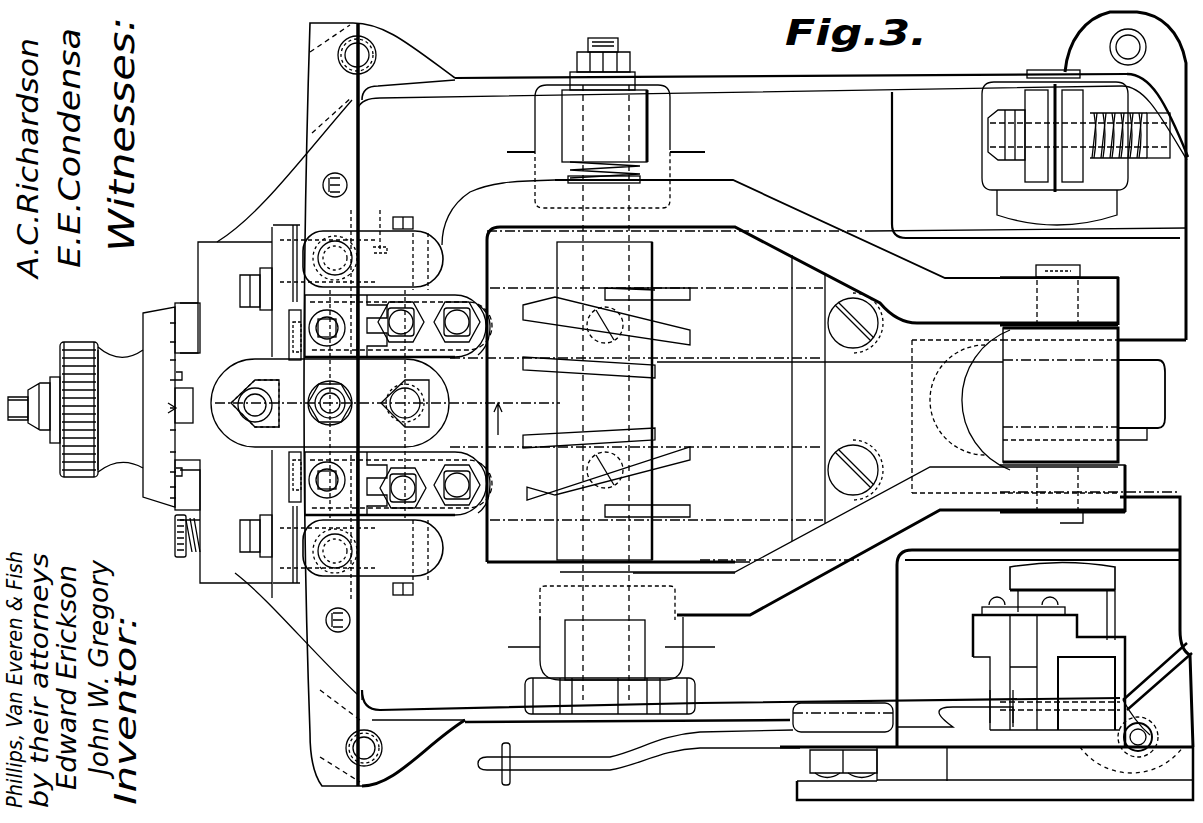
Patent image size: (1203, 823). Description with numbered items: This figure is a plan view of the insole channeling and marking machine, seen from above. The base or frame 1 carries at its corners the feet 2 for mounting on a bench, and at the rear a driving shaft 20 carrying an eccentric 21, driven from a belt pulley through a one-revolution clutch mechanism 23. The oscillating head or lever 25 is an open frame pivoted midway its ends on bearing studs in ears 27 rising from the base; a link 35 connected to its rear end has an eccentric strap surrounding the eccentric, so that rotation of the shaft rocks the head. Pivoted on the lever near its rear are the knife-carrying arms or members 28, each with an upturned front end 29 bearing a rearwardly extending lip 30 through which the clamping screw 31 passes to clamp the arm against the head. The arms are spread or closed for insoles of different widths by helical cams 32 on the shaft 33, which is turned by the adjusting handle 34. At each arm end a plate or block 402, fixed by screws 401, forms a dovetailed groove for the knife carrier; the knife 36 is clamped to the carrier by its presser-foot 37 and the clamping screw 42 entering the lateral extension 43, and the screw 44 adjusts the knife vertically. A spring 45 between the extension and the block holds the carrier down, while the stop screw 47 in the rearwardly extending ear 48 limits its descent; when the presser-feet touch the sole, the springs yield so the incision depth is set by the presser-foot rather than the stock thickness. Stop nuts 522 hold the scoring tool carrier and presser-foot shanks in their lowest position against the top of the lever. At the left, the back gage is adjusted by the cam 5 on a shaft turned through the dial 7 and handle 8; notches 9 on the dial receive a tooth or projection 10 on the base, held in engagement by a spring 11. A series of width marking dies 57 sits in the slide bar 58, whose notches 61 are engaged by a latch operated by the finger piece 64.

The base or frame 1 is at (822, 80).
The feet 2 is at (412, 68).
The cam 5 is at (351, 411).
The dial 7 is at (146, 382).
The handle 8 is at (80, 343).
The notches 9 is at (178, 376).
The tooth or projection 10 is at (172, 410).
The spring 11 is at (48, 382).
The driving shaft 20 is at (1036, 72).
The eccentric 21 is at (975, 445).
The one-revolution clutch mechanism 23 is at (1000, 684).
The oscillating head or lever 25 is at (767, 244).
The ears 27 is at (660, 92).
The knife-carrying arms or members 28 is at (762, 358).
The upturned front end 29 is at (378, 252).
The rearwardly extending lip 30 is at (453, 294).
The clamping screw 31 is at (480, 298).
The helical cams 32 is at (658, 348).
The shaft 33 is at (592, 403).
The adjusting handle 34 is at (596, 714).
The link 35 is at (1105, 448).
The cutting knives 36 is at (300, 336).
The presser-foot 37 is at (285, 358).
The clamping screw 42 is at (240, 290).
The lateral extension 43 is at (312, 235).
The screw 44 is at (300, 318).
The spring 45 is at (312, 578).
The stop screw 47 is at (400, 336).
The rearwardly extending ear 48 is at (397, 300).
The width marking dies 57 is at (352, 620).
The slide bar 58 is at (350, 155).
The notches 61 is at (352, 690).
The finger piece 64 is at (176, 538).
The screws 401 is at (408, 217).
The plate or block 402 is at (380, 231).
The stop nuts 522 is at (243, 415).